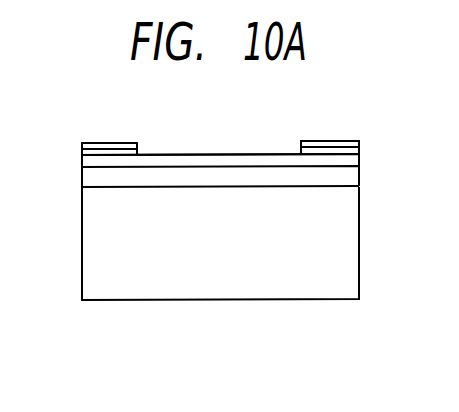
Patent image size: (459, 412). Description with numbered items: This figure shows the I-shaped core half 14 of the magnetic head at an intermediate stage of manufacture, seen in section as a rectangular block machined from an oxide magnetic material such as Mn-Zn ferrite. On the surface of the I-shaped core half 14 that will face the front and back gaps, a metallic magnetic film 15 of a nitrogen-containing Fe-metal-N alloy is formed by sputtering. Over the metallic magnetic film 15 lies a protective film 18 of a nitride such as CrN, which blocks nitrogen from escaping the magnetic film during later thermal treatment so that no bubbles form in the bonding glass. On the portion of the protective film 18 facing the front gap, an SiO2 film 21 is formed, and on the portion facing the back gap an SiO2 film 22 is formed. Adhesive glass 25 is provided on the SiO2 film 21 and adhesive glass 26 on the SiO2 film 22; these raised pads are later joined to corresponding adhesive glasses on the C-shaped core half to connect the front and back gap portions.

The I-shaped core half 14 is at (103, 252).
The metallic magnetic film 15 is at (84, 189).
The protective film 18 is at (91, 178).
The SiO2 film 21 is at (89, 161).
The SiO2 film 22 is at (359, 153).
The adhesive glass 25 is at (82, 148).
The adhesive glass 26 is at (359, 144).